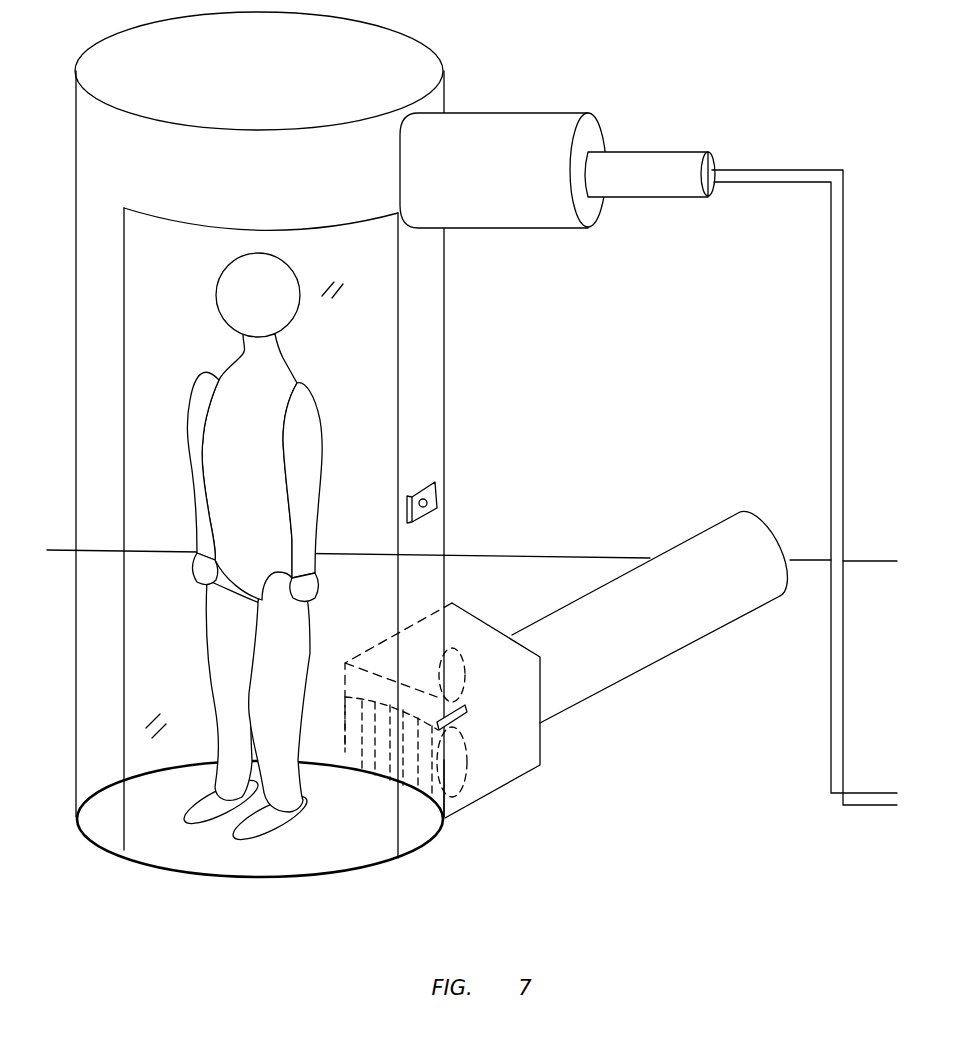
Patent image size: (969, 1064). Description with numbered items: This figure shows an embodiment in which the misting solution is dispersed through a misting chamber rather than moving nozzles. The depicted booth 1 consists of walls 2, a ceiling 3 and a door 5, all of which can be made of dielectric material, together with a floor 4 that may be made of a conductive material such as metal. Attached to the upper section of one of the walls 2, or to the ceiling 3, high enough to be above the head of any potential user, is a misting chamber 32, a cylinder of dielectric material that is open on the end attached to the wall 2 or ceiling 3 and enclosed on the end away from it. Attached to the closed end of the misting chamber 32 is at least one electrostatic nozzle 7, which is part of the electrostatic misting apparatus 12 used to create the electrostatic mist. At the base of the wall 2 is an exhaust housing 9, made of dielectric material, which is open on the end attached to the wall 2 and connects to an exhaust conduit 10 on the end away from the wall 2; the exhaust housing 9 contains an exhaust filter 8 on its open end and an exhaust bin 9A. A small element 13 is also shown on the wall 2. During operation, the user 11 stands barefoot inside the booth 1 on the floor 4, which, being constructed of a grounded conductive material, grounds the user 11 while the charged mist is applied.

The booth 1 is at (445, 447).
The walls 2 is at (445, 388).
The ceiling 3 is at (403, 78).
The floor 4 is at (322, 858).
The door 5 is at (410, 820).
The electrostatic nozzle 7 is at (668, 152).
The exhaust filter 8 is at (423, 773).
The exhaust housing 9 is at (472, 632).
The exhaust bin 9A is at (465, 760).
The air duct 10 is at (642, 653).
The user 11 is at (290, 378).
The electrostatic misting apparatus 12 is at (795, 170).
The switch 13 is at (437, 497).
The misting chamber 32 is at (528, 232).